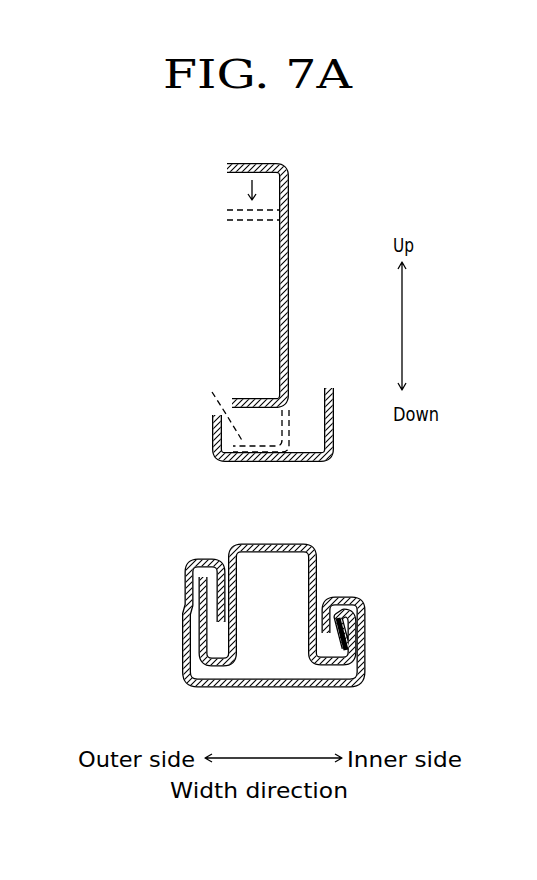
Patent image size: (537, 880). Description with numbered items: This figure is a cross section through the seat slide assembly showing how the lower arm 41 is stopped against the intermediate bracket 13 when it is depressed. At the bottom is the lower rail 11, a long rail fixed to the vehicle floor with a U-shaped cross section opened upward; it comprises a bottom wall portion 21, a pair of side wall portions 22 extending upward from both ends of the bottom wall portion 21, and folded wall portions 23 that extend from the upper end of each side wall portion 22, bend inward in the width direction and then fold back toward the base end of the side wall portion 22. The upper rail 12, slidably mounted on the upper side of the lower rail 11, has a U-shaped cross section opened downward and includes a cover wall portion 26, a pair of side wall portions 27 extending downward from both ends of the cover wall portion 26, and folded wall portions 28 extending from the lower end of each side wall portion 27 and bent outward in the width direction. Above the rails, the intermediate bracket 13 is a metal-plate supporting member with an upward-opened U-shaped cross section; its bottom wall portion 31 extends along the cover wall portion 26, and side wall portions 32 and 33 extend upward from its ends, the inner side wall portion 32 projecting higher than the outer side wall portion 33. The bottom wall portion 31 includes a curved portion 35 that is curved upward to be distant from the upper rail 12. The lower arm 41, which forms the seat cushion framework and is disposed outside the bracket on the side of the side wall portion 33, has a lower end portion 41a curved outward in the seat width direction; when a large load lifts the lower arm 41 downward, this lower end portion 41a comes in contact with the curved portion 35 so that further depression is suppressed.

The lower arm 41 is at (289, 275).
The lower end portion 41a is at (243, 398).
The intermediate bracket 13 is at (272, 446).
The bottom wall portion 31 is at (287, 477).
The curved portion 35 is at (287, 477).
The side wall portion 32 is at (334, 430).
The side wall portion 33 is at (212, 438).
The lower rail 11 is at (272, 629).
The bottom wall portion 21 is at (275, 689).
The side wall portions 22 is at (180, 621).
The folded wall portions 23 is at (207, 560).
The folded wall portions 28 is at (207, 662).
The upper rail 12 is at (270, 595).
The cover wall portion 26 is at (255, 543).
The side wall portions 27 is at (308, 583).